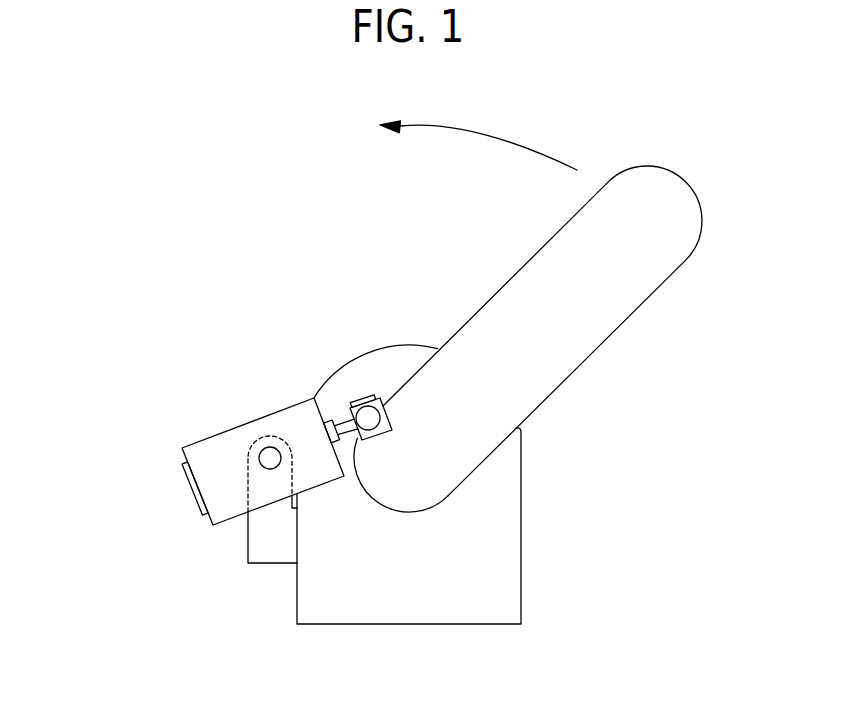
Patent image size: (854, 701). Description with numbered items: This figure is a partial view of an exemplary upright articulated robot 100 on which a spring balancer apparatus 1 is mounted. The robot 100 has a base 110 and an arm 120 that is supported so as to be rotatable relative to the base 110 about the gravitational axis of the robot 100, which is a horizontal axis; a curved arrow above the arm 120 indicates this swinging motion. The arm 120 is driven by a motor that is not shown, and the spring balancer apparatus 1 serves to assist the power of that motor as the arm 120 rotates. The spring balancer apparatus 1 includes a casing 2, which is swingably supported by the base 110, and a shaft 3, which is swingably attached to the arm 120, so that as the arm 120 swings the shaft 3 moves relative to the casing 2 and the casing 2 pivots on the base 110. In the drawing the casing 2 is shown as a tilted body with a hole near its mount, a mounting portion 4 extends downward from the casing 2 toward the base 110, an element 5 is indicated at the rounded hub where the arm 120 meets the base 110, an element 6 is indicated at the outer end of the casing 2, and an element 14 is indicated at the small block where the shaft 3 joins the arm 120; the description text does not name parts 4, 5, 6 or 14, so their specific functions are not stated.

The upright articulated robot 100 is at (279, 206).
The spring balancer apparatus 1 is at (239, 369).
The casing 2 is at (205, 419).
The shaft 3 is at (342, 424).
The bracket 4 is at (225, 522).
The joint portion 5 is at (340, 460).
The cover 6 is at (190, 488).
The motor 14 is at (392, 410).
The base 110 is at (521, 518).
The arm 120 is at (657, 292).